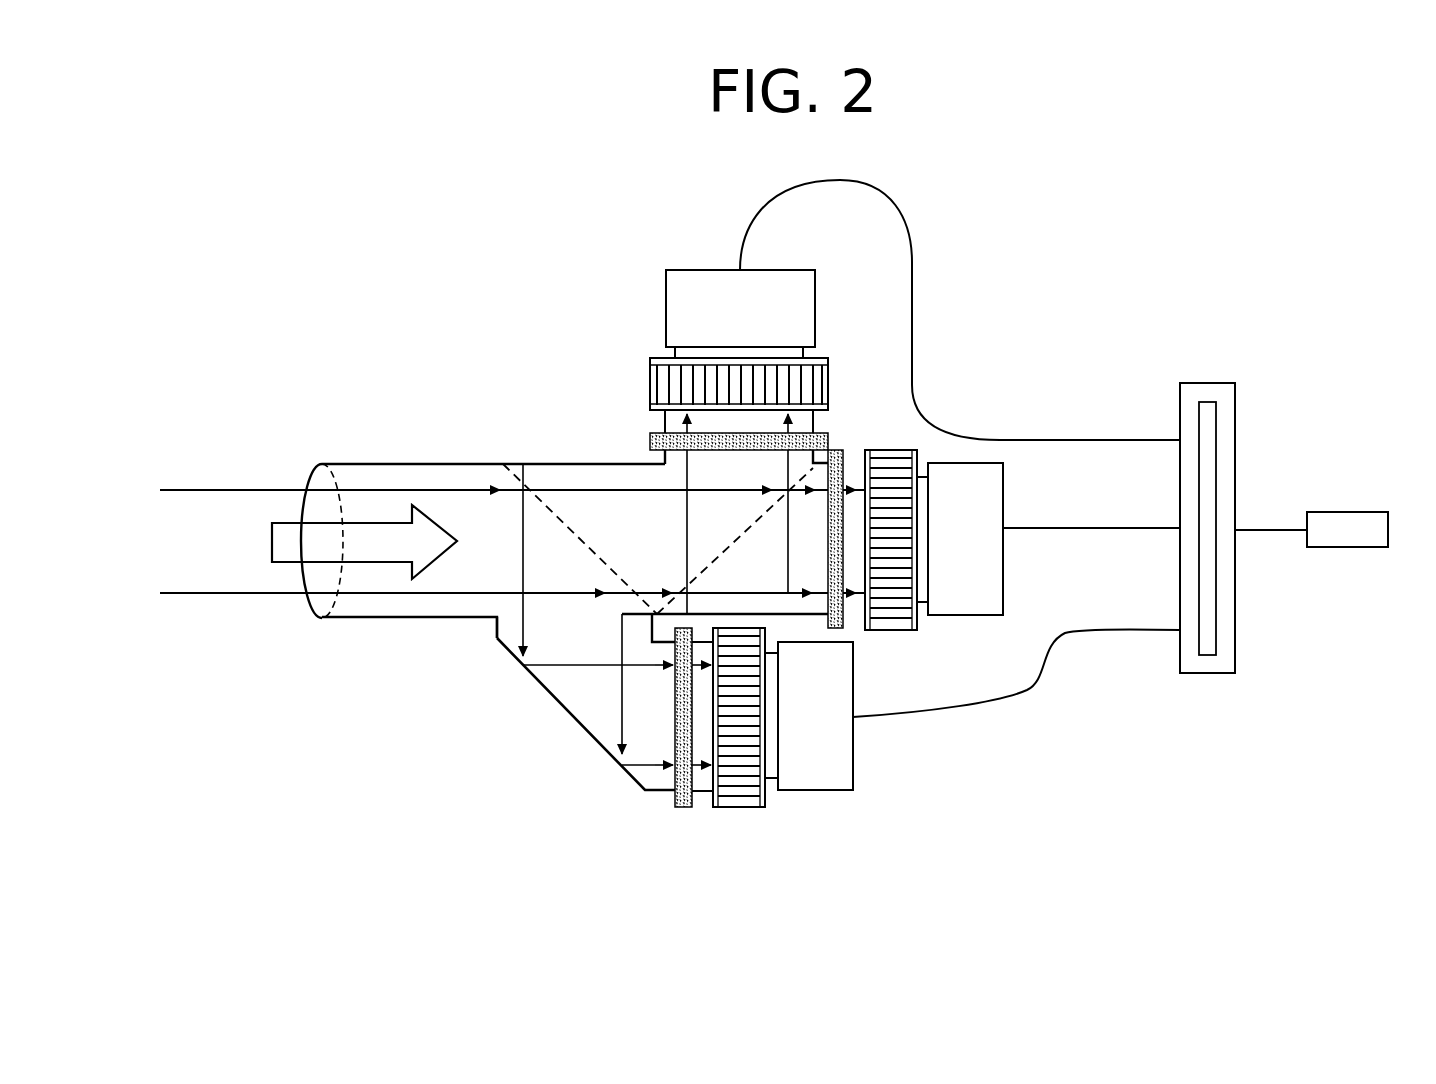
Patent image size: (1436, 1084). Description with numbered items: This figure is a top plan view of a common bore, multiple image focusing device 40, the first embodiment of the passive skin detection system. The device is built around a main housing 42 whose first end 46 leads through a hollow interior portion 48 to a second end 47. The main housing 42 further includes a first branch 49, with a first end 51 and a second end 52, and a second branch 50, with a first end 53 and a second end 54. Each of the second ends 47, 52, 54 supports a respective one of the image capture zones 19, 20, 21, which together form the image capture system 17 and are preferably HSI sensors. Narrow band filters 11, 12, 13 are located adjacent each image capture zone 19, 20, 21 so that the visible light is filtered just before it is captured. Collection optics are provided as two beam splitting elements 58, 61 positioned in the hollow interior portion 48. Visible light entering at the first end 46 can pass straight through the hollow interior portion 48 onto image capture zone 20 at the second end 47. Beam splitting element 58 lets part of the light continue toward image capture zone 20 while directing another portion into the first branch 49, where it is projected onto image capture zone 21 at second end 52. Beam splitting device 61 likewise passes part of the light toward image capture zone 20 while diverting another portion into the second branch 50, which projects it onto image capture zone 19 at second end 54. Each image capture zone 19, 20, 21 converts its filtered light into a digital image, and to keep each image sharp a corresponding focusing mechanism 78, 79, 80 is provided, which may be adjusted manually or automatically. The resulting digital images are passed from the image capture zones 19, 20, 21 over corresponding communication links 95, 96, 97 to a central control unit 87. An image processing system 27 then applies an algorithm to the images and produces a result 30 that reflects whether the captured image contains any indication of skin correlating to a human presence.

The multiple image focusing device 40 is at (314, 343).
The main housing 42 is at (348, 462).
The first end 46 is at (310, 607).
The hollow interior portion 48 is at (478, 513).
The beam splitting element 58 is at (552, 510).
The beam splitting device 61 is at (757, 527).
The first end 51 is at (487, 627).
The first branch 49 is at (532, 684).
The narrow band filter 11 is at (813, 455).
The first end 53 is at (747, 452).
The second branch 50 is at (650, 392).
The focusing mechanism 78 is at (827, 365).
The image capture zone 19 is at (693, 290).
The communication link 95 is at (882, 193).
The second end 54 is at (813, 420).
The second end 47 is at (857, 462).
The focusing mechanism 79 is at (910, 450).
The narrow band filter 12 is at (827, 543).
The image capture zone 20 is at (990, 563).
The communication link 96 is at (1030, 527).
The central control unit 87 is at (1208, 392).
The image processing system 27 is at (1216, 602).
The result 30 is at (1352, 523).
The communication link 97 is at (1152, 630).
The image capture zone 21 is at (837, 768).
The focusing mechanism 80 is at (740, 807).
The second end 52 is at (698, 807).
The image capture system 17 is at (811, 858).
The narrow band filter 13 is at (675, 720).